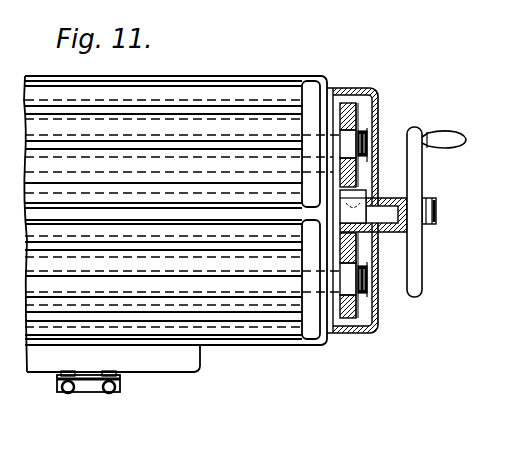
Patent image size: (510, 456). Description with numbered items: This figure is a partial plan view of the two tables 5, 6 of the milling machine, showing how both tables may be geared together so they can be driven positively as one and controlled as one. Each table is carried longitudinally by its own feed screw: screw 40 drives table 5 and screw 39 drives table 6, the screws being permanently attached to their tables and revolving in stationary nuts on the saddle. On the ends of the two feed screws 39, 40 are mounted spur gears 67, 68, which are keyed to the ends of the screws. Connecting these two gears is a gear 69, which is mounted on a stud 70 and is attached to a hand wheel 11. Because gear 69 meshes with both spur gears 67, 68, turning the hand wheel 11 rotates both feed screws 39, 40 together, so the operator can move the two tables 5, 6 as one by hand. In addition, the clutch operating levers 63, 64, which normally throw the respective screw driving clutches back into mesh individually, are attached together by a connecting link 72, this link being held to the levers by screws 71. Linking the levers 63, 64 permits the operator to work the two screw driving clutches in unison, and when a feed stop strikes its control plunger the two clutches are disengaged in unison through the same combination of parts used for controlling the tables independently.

The table 5 is at (260, 348).
The table 6 is at (287, 76).
The hand wheel 11 is at (428, 136).
The feed screw 39 is at (380, 132).
The feed screw 40 is at (377, 297).
The clutch operating lever 63 is at (66, 393).
The clutch operating lever 64 is at (114, 393).
The spur gear 67 is at (351, 102).
The spur gear 68 is at (367, 332).
The gear 69 is at (360, 234).
The stud 70 is at (415, 222).
The screw 71 is at (110, 373).
The connecting link 72 is at (90, 393).